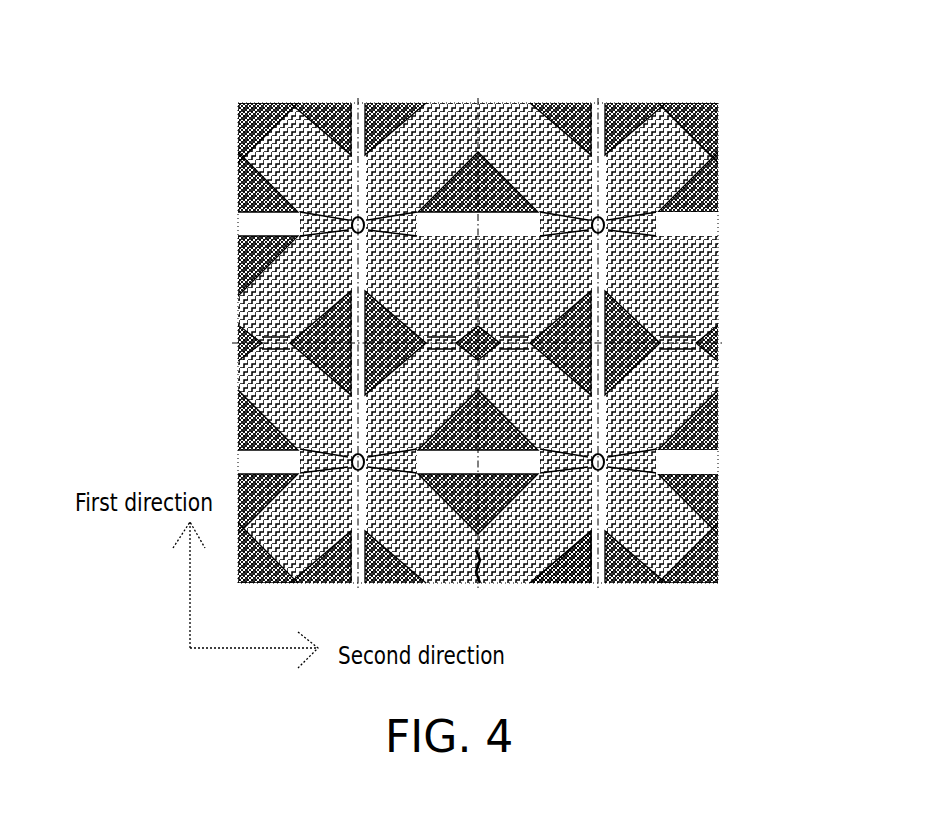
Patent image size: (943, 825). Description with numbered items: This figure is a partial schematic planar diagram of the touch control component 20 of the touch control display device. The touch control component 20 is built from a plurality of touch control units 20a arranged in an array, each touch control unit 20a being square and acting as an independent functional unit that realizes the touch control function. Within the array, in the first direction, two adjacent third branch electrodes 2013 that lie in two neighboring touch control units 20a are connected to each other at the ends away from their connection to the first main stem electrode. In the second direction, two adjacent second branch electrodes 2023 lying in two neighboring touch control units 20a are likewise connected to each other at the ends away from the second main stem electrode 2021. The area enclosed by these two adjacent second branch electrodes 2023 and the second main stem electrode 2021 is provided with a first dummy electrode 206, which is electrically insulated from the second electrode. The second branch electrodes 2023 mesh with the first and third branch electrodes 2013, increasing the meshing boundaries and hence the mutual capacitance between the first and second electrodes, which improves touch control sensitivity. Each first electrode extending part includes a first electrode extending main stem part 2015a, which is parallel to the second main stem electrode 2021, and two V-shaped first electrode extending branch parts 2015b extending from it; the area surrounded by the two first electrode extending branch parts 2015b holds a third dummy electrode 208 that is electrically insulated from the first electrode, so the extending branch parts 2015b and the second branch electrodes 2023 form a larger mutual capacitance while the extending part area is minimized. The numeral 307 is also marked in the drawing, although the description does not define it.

The touch control component 20 is at (490, 325).
The touch control unit 20a is at (718, 216).
The third branch electrode 2013 is at (717, 299).
The first electrode extending main stem part 2015a is at (716, 313).
The first electrode extending branch part 2015b is at (713, 331).
The third dummy electrode 208 is at (713, 348).
The electrode 307 is at (713, 370).
The second main stem electrode 2021 is at (693, 458).
The second branch electrode 2023 is at (533, 582).
The first dummy electrode 206 is at (477, 583).